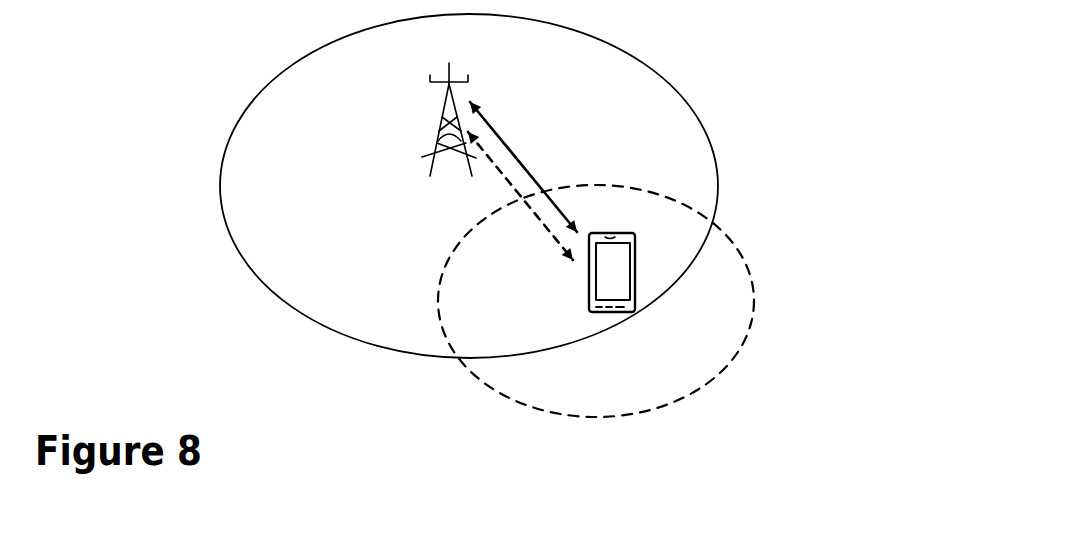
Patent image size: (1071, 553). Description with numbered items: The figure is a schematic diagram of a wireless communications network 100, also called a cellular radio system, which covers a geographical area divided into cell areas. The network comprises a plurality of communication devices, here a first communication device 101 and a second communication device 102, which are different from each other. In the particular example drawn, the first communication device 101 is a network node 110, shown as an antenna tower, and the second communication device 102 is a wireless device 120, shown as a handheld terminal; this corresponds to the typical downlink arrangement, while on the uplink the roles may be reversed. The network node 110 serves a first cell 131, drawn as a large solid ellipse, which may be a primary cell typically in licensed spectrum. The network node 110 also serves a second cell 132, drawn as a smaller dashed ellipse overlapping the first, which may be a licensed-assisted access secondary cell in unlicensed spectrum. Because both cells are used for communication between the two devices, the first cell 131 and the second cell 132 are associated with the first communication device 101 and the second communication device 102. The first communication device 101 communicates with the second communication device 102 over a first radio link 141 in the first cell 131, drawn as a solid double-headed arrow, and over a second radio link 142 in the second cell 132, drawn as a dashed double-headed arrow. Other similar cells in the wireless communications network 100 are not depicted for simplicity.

The wireless communications network 100 is at (455, 213).
The first communication device 101 is at (369, 132).
The network node 110 is at (443, 143).
The second communication device 102 is at (654, 306).
The wireless device 120 is at (635, 291).
The first cell 131 is at (628, 52).
The second cell 132 is at (723, 231).
The first radio link 141 is at (511, 150).
The second radio link 142 is at (508, 184).